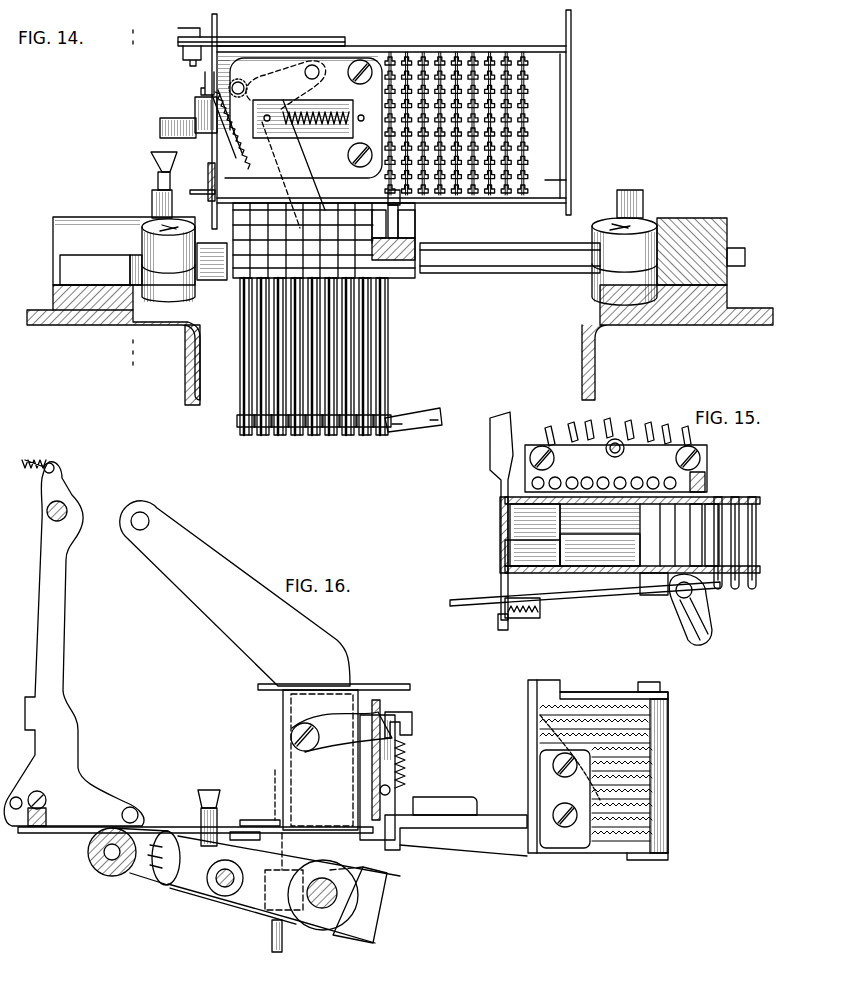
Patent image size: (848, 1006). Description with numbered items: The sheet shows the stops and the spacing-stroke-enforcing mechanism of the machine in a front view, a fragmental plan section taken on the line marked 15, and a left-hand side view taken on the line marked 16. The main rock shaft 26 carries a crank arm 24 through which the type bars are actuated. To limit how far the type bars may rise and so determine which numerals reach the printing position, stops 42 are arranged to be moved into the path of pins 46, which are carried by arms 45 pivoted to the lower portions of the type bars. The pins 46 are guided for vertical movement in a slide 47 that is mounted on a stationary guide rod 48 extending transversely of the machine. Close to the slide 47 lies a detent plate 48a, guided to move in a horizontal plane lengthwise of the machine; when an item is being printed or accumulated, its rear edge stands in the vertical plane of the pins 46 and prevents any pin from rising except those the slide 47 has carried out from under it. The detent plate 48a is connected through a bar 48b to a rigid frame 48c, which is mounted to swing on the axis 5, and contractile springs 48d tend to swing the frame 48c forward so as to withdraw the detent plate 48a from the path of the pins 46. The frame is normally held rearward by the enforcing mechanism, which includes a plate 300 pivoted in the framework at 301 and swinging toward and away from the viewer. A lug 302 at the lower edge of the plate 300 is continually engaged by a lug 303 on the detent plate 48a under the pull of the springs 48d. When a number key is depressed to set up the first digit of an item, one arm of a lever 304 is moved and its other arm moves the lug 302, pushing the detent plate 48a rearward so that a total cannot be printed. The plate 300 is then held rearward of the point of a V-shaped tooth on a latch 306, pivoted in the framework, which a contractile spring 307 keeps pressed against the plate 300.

In FIG. 16, the axis 5 is at (46, 509).
In FIG. 14, the section line 15 is at (595, 50).
In FIG. 16, the section line 15 is at (425, 703).
In FIG. 14, the section line 16 is at (141, 385).
In FIG. 14, the crank arm 24 is at (632, 192).
In FIG. 14, the main rock shaft 26 is at (213, 280).
In FIG. 16, the main rock shaft 26 is at (316, 935).
In FIG. 14, the stops 42 is at (460, 60).
In FIG. 15, the stops 42 is at (752, 495).
In FIG. 14, the arms 45 is at (440, 406).
In FIG. 15, the arms 45 is at (680, 428).
In FIG. 14, the pins 46 is at (375, 348).
In FIG. 15, the pins 46 is at (605, 470).
In FIG. 16, the pins 46 is at (272, 934).
In FIG. 14, the slide 47 is at (413, 278).
In FIG. 15, the slide 47 is at (616, 465).
In FIG. 16, the slide 47 is at (255, 826).
In FIG. 14, the guide rod 48 is at (548, 205).
In FIG. 15, the guide rod 48 is at (540, 520).
In FIG. 16, the guide rod 48 is at (350, 935).
In FIG. 14, the detent plate 48a is at (200, 185).
In FIG. 16, the detent plate 48a is at (318, 820).
In FIG. 14, the bar 48b is at (196, 182).
In FIG. 15, the bar 48b is at (505, 410).
In FIG. 16, the bar 48b is at (58, 833).
In FIG. 16, the rigid frame 48c is at (64, 645).
In FIG. 16, the contractile springs 48d is at (35, 462).
In FIG. 14, the plate 300 is at (330, 60).
In FIG. 15, the plate 300 is at (585, 598).
In FIG. 14, the pivot 301 is at (372, 62).
In FIG. 15, the pivot 301 is at (652, 610).
In FIG. 14, the lug 302 is at (278, 140).
In FIG. 15, the lug 303 is at (560, 565).
In FIG. 16, the lever 304 is at (402, 830).
In FIG. 14, the latch 306 is at (205, 75).
In FIG. 15, the latch 306 is at (502, 622).
In FIG. 16, the latch 306 is at (415, 720).
In FIG. 14, the contractile spring 307 is at (195, 105).
In FIG. 15, the contractile spring 307 is at (520, 616).
In FIG. 16, the contractile spring 307 is at (408, 765).